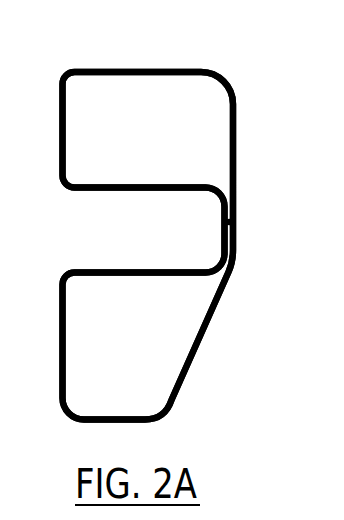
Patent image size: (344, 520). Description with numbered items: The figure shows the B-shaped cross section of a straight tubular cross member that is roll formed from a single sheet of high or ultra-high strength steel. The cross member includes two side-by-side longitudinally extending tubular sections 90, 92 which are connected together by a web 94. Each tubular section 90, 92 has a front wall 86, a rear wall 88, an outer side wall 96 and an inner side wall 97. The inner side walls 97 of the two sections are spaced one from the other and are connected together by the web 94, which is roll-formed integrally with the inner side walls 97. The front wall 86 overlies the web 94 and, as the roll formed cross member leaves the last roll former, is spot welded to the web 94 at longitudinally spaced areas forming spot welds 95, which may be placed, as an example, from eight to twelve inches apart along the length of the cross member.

The tubular section 90 is at (64, 62).
The outer side wall 96 is at (163, 70).
The rear wall 88 is at (57, 134).
The front wall 86 is at (237, 130).
The inner side wall 97 is at (128, 192).
The web 94 is at (221, 208).
The spot weld 95 is at (237, 222).
The tubular section 92 is at (343, 416).